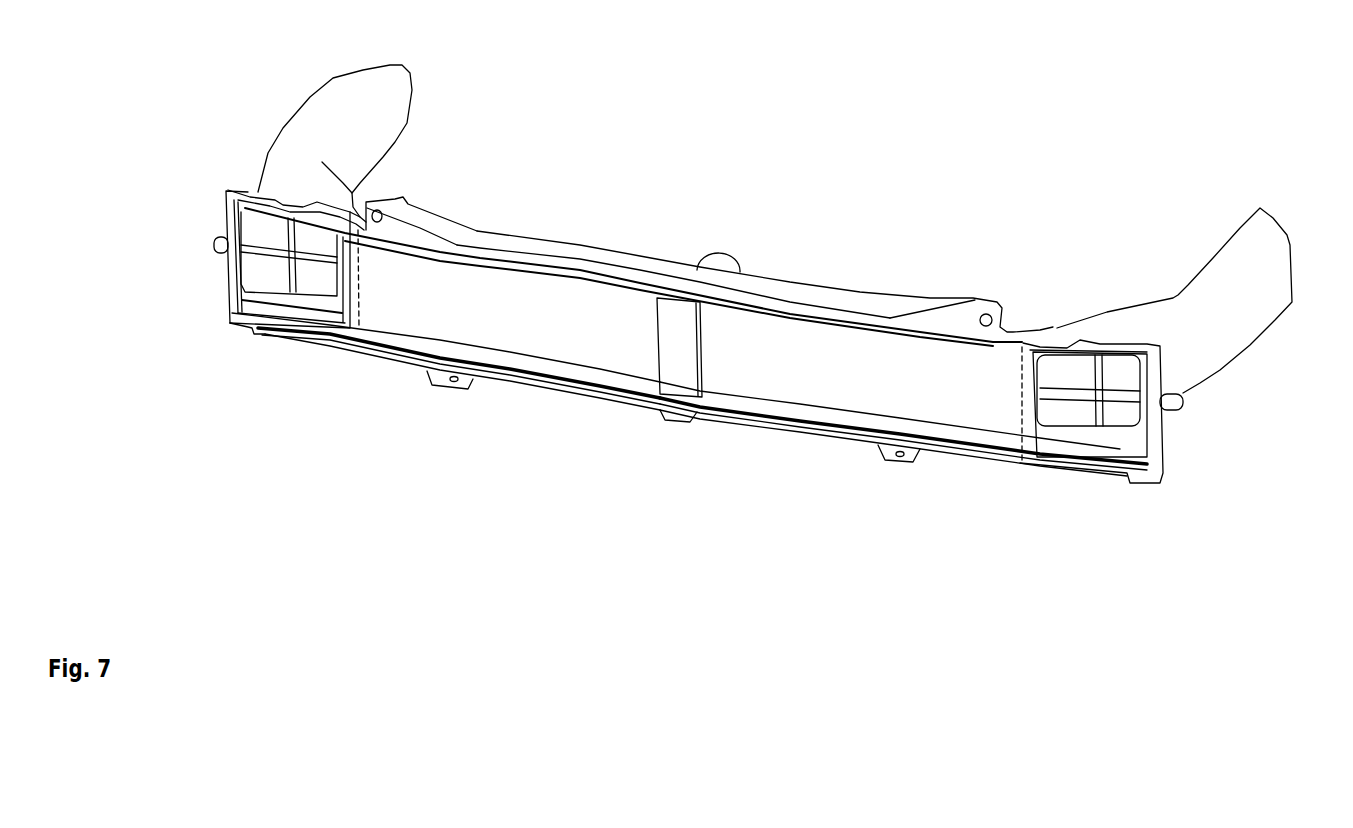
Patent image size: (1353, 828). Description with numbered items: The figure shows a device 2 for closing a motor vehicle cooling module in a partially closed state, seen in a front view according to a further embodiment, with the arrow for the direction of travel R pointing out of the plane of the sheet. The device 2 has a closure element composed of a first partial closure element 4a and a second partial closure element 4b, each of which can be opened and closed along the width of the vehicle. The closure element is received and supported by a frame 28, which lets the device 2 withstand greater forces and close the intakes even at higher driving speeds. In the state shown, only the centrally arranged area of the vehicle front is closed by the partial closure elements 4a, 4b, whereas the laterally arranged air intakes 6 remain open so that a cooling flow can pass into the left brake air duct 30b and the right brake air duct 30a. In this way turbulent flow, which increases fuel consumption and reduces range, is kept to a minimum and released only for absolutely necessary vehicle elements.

The device 2 is at (754, 389).
The first partial closure element 4a is at (868, 403).
The second partial closure element 4b is at (423, 320).
The air intakes 6 is at (258, 275).
The frame 28 is at (563, 258).
The right brake air duct 30a is at (1217, 348).
The left brake air duct 30b is at (282, 147).
The direction of travel R is at (660, 452).